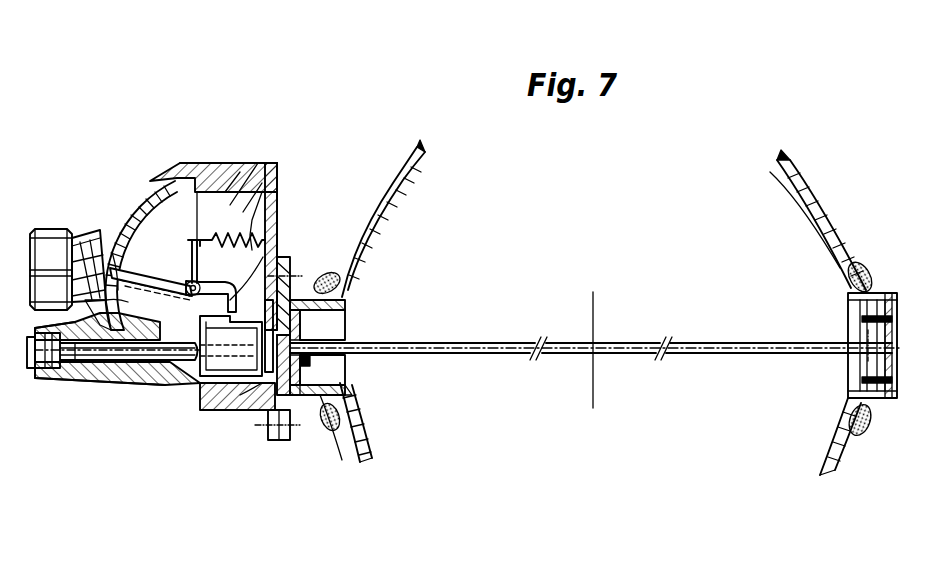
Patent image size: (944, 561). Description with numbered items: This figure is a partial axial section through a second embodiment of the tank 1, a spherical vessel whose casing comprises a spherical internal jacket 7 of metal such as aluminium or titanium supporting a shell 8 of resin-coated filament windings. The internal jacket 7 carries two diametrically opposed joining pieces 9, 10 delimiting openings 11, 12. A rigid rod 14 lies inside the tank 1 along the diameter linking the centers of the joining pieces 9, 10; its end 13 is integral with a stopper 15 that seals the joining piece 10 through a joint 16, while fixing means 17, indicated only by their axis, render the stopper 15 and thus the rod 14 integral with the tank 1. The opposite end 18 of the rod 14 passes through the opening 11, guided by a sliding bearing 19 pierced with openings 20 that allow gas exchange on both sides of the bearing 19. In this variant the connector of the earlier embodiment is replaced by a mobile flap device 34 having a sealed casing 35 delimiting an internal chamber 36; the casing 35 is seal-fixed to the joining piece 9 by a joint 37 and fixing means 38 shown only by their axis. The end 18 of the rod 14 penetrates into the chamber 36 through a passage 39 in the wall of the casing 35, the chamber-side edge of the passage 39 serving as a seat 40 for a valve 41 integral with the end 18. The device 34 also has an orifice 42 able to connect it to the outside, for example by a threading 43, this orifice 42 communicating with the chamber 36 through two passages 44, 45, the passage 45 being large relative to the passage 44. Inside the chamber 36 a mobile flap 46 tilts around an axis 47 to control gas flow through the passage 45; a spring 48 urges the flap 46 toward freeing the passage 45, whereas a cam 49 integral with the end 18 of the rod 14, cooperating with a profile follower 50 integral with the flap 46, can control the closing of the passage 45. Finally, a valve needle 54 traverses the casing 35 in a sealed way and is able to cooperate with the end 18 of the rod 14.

The tank 1 is at (402, 122).
The internal jacket 7 is at (770, 172).
The shell 8 is at (782, 155).
The joining piece 9 is at (345, 300).
The joining piece 10 is at (850, 290).
The opening 11 is at (335, 325).
The opening 12 is at (855, 333).
The end of the rod 13 is at (848, 352).
The rigid rod 14 is at (645, 343).
The stopper 15 is at (890, 298).
The joint 16 is at (862, 377).
The fixing means 17 is at (885, 400).
The end of the rod 18 is at (262, 440).
The sliding bearing 19 is at (312, 363).
The openings 20 is at (332, 388).
The mobile flap device 34 is at (135, 148).
The sealed casing 35 is at (218, 163).
The internal chamber 36 is at (245, 163).
The joint 37 is at (318, 422).
The fixing means 38 is at (325, 272).
The passage 39 is at (240, 400).
The seat 40 is at (266, 341).
The valve 41 is at (212, 378).
The orifice 42 is at (51, 261).
The threading 43 is at (50, 229).
The passage 44 is at (110, 286).
The passage 45 is at (93, 250).
The mobile flap 46 is at (130, 262).
The axis 47 is at (180, 300).
The spring 48 is at (277, 167).
The cam 49 is at (163, 385).
The profile follower 50 is at (288, 275).
The valve needle 54 is at (95, 360).